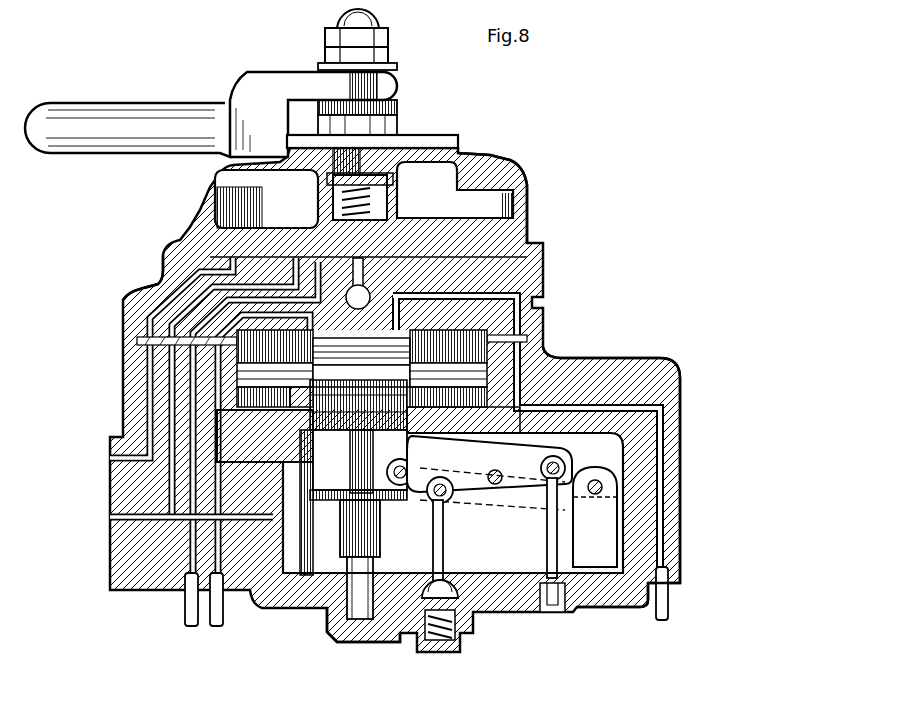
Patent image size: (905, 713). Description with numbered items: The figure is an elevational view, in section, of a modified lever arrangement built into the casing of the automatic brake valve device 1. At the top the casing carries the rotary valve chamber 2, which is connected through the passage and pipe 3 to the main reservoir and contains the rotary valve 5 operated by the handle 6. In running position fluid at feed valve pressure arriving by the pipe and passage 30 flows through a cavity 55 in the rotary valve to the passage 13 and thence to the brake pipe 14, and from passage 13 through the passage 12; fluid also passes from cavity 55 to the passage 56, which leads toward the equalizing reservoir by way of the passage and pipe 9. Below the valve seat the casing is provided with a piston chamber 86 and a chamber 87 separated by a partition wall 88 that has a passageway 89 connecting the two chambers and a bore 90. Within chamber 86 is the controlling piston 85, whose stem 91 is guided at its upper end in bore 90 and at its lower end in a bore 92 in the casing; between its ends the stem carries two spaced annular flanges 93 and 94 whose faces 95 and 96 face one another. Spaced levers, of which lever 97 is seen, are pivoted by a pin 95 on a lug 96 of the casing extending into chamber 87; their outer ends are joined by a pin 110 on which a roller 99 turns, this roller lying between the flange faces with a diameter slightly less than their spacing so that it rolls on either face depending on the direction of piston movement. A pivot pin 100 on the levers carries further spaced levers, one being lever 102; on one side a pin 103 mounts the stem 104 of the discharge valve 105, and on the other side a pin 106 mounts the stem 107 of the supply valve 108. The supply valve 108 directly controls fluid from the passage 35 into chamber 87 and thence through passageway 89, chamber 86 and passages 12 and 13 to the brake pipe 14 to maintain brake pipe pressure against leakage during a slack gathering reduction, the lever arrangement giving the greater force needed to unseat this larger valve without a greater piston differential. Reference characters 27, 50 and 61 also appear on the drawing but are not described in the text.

The automatic brake valve device 1 is at (448, 138).
The rotary valve chamber 2 is at (420, 180).
The passage and pipe 3 is at (165, 241).
The rotary valve 5 is at (480, 207).
The handle 6 is at (118, 123).
The passage and pipe 9 is at (467, 297).
The passage 12 is at (222, 412).
The passage 13 is at (220, 545).
The brake pipe 14 is at (221, 608).
The plug 27 is at (553, 612).
The pipe and passage 30 is at (190, 603).
The passage 35 is at (167, 514).
The passage 50 is at (120, 437).
The cavity 55 is at (293, 258).
The passage 56 is at (323, 270).
The boss 61 is at (158, 275).
The controlling piston 85 is at (485, 367).
The piston chamber 86 is at (480, 395).
The chamber 87 is at (500, 565).
The partition wall 88 is at (437, 420).
The passageway 89 is at (480, 420).
The bore 90 is at (232, 420).
The stem 91 is at (360, 533).
The bore 92 is at (360, 615).
The annular flange 93 is at (357, 447).
The annular flange 94 is at (327, 503).
The pin 95 is at (313, 453).
The lug 96 is at (323, 490).
The lever 97 is at (433, 470).
The roller 99 is at (400, 485).
The pivot pin 100 is at (500, 485).
The lever 102 is at (477, 477).
The pin 103 is at (558, 466).
The stem 104 is at (553, 533).
The discharge valve 105 is at (590, 607).
The pin 106 is at (440, 497).
The stem 107 is at (450, 545).
The supply valve 108 is at (480, 632).
The pin 110 is at (358, 474).